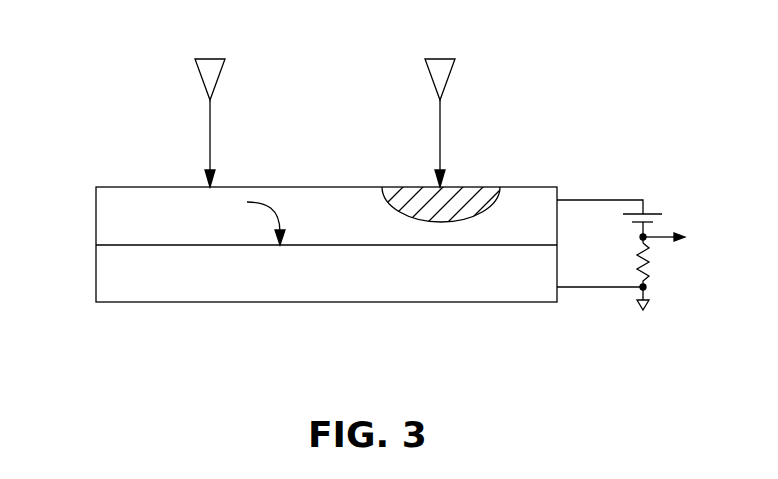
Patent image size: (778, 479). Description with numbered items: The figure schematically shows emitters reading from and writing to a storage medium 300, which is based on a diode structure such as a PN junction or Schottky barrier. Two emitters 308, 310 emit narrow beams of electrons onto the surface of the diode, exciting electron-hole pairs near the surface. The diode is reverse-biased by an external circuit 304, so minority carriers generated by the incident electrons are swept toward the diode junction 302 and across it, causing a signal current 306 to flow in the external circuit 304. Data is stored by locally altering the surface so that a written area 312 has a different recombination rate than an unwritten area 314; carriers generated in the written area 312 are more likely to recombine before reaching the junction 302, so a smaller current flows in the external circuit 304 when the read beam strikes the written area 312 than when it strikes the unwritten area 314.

The storage medium 300 is at (131, 128).
The diode junction 302 is at (190, 245).
The external circuit 304 is at (648, 214).
The signal current 306 is at (655, 238).
The emitter 308 is at (215, 59).
The emitter 310 is at (447, 59).
The written area 312 is at (487, 187).
The unwritten area 314 is at (238, 187).